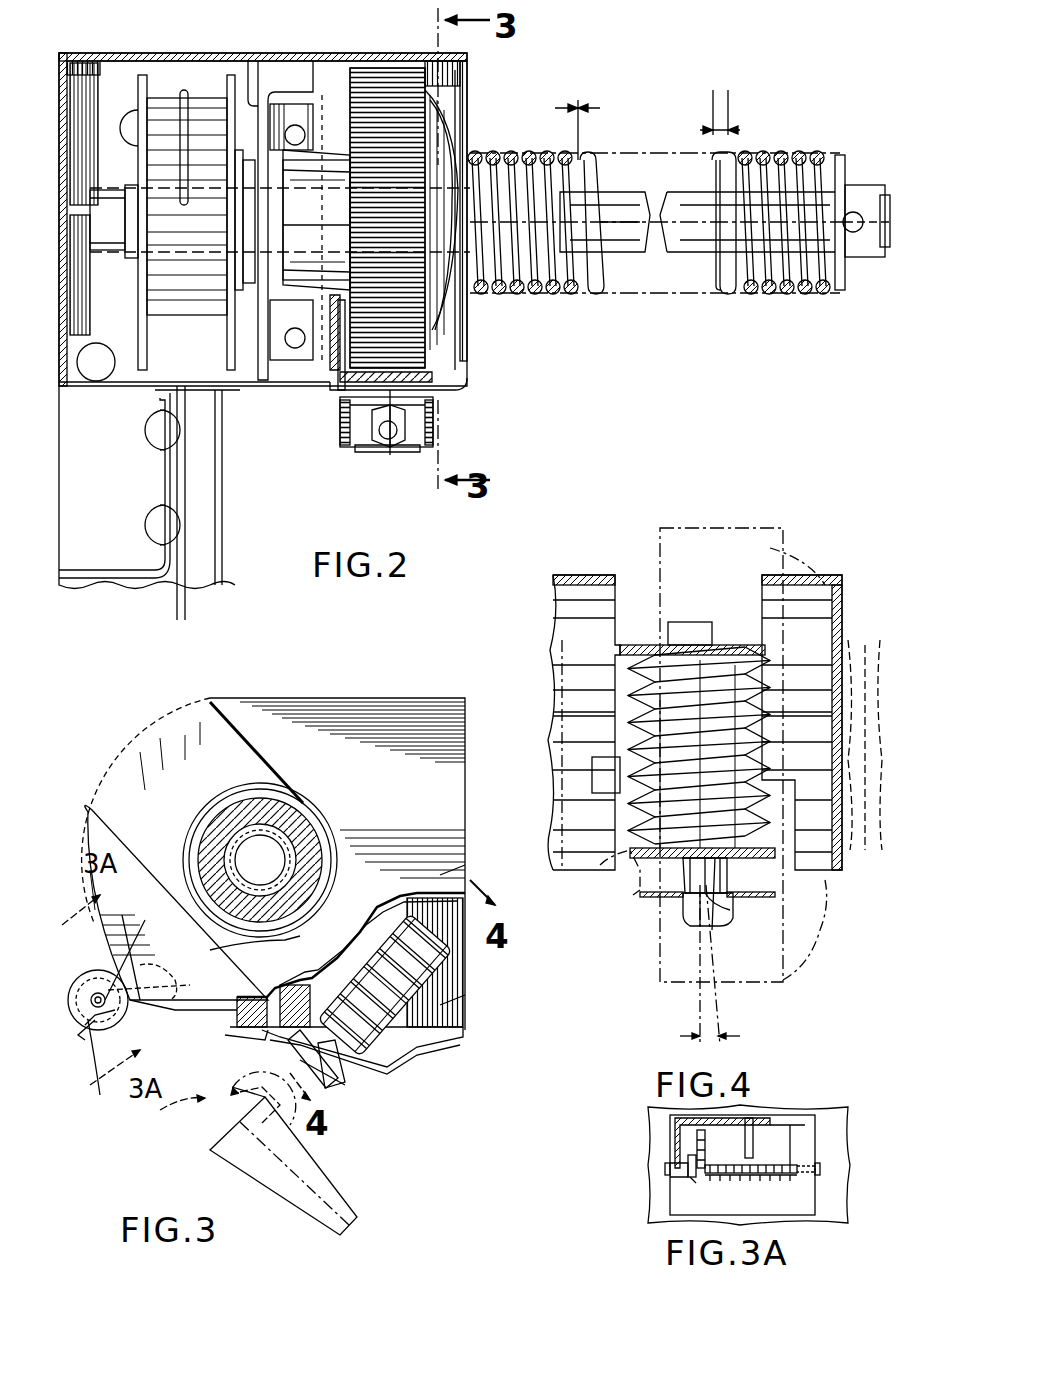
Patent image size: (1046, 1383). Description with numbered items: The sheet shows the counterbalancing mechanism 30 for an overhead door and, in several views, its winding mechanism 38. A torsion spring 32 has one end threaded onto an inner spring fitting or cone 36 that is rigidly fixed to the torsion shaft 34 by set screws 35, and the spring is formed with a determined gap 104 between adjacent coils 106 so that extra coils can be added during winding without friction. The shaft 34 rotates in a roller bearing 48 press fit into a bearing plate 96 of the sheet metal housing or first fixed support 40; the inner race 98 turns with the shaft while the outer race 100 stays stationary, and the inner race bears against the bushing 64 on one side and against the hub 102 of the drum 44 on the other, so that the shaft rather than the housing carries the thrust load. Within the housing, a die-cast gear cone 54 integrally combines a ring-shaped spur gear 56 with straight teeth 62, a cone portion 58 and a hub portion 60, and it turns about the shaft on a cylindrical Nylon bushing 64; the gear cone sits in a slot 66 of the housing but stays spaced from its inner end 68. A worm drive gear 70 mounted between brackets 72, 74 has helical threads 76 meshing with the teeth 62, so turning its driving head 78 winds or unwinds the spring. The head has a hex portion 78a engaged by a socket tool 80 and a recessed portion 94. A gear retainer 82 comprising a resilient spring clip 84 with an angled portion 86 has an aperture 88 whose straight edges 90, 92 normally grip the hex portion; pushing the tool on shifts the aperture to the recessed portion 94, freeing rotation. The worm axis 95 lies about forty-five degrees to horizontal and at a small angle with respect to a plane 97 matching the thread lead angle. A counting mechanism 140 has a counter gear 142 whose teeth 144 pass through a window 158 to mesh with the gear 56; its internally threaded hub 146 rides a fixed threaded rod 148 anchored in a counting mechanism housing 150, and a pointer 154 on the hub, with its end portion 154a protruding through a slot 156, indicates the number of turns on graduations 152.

In FIG. 2, the counterbalancing mechanism 30 is at (558, 393).
In FIG. 2, the torsion spring 32 is at (688, 300).
In FIG. 4, the torsion spring 32 is at (858, 640).
In FIG. 2, the torsion shaft 34 is at (108, 205).
In FIG. 3, the torsion shaft 34 is at (288, 860).
In FIG. 2, the set screws 35 is at (857, 225).
In FIG. 2, the inner spring fitting or cone 36 is at (845, 162).
In FIG. 2, the winding mechanism 38 is at (462, 86).
In FIG. 3, the winding mechanism 38 is at (168, 785).
In FIG. 4, the winding mechanism 38 is at (738, 510).
In FIG. 2, the first fixed support 40 is at (318, 60).
In FIG. 3, the first fixed support 40 is at (372, 705).
In FIG. 4, the first fixed support 40 is at (562, 575).
In FIG. 3A, the first fixed support 40 is at (830, 1118).
In FIG. 2, the drum 44 is at (192, 246).
In FIG. 3, the drum 44 is at (185, 745).
In FIG. 2, the roller bearing 48 is at (250, 300).
In FIG. 2, the gear cone 54 is at (448, 122).
In FIG. 4, the gear cone 54 is at (795, 545).
In FIG. 2, the ring-shaped gear 56 is at (390, 95).
In FIG. 3, the ring-shaped gear 56 is at (142, 870).
In FIG. 4, the ring-shaped gear 56 is at (705, 525).
In FIG. 2, the cone portion 58 is at (440, 153).
In FIG. 4, the cone portion 58 is at (828, 960).
In FIG. 2, the hub portion 60 is at (327, 212).
In FIG. 4, the hub portion 60 is at (568, 878).
In FIG. 2, the peripheral teeth 62 is at (340, 232).
In FIG. 2, the cylindrical Nylon bushing 64 is at (301, 217).
In FIG. 3, the cylindrical Nylon bushing 64 is at (300, 830).
In FIG. 3, the slot 66 is at (245, 760).
In FIG. 3, the inner end 68 is at (246, 946).
In FIG. 2, the worm drive gear 70 is at (338, 360).
In FIG. 3, the worm drive gear 70 is at (420, 960).
In FIG. 4, the worm drive gear 70 is at (712, 690).
In FIG. 3, the bracket 72 is at (410, 898).
In FIG. 4, the bracket 72 is at (620, 650).
In FIG. 2, the bracket 74 is at (425, 377).
In FIG. 3, the bracket 74 is at (415, 1063).
In FIG. 4, the bracket 74 is at (635, 858).
In FIG. 2, the helical teeth or threads 76 is at (332, 305).
In FIG. 3, the helical teeth or threads 76 is at (445, 1010).
In FIG. 4, the helical teeth or threads 76 is at (648, 780).
In FIG. 3, the driving head 78 is at (285, 1058).
In FIG. 4, the driving head 78 is at (685, 925).
In FIG. 2, the hex portion 78a is at (392, 440).
In FIG. 3, the hex portion 78a is at (320, 1082).
In FIG. 4, the hex portion 78a is at (715, 930).
In FIG. 3, the socket tool 80 is at (190, 1110).
In FIG. 2, the gear retainer 82 is at (440, 412).
In FIG. 3, the gear retainer 82 is at (240, 1042).
In FIG. 4, the gear retainer 82 is at (624, 910).
In FIG. 2, the resilient spring clip 84 is at (433, 402).
In FIG. 3, the resilient spring clip 84 is at (235, 1010).
In FIG. 2, the angled portion 86 is at (365, 430).
In FIG. 3, the angled portion 86 is at (340, 1072).
In FIG. 4, the angled portion 86 is at (680, 920).
In FIG. 2, the aperture 88 is at (365, 445).
In FIG. 2, the straight edge 90 is at (355, 425).
In FIG. 4, the straight edge 90 is at (678, 895).
In FIG. 2, the straight edge 92 is at (438, 425).
In FIG. 4, the straight edge 92 is at (735, 900).
In FIG. 3, the stepped down or recessed portion 94 is at (310, 982).
In FIG. 4, the stepped down or recessed portion 94 is at (725, 905).
In FIG. 3, the axis 95 is at (315, 1103).
In FIG. 4, the axis 95 is at (718, 1015).
In FIG. 2, the bearing plate 96 is at (258, 85).
In FIG. 4, the plane 97 is at (695, 998).
In FIG. 2, the inner race 98 is at (282, 205).
In FIG. 2, the outer race 100 is at (250, 222).
In FIG. 2, the hub 102 is at (128, 237).
In FIG. 2, the gap 104 is at (582, 98).
In FIG. 2, the coils 106 is at (580, 150).
In FIG. 3, the counting mechanism 140 is at (220, 1099).
In FIG. 3, the counter gear 142 is at (138, 945).
In FIG. 3A, the counter gear 142 is at (708, 1148).
In FIG. 3, the gear teeth 144 is at (125, 920).
In FIG. 3, the internally threaded hub 146 is at (152, 965).
In FIG. 3A, the internally threaded hub 146 is at (668, 1125).
In FIG. 3, the fixed threaded rod 148 is at (175, 968).
In FIG. 3A, the fixed threaded rod 148 is at (750, 1163).
In FIG. 3, the counting mechanism housing 150 is at (100, 970).
In FIG. 3A, the counting mechanism housing 150 is at (800, 1130).
In FIG. 3A, the graduations 152 is at (680, 1180).
In FIG. 3, the pointer 154 is at (115, 1025).
In FIG. 3, the end portion 154a is at (92, 1030).
In FIG. 3A, the end portion 154a is at (692, 1180).
In FIG. 3, the slot 156 is at (98, 1071).
In FIG. 3A, the slot 156 is at (795, 1168).
In FIG. 3A, the window 158 is at (760, 1130).
In FIG. 2, the gap dimension d is at (720, 128).